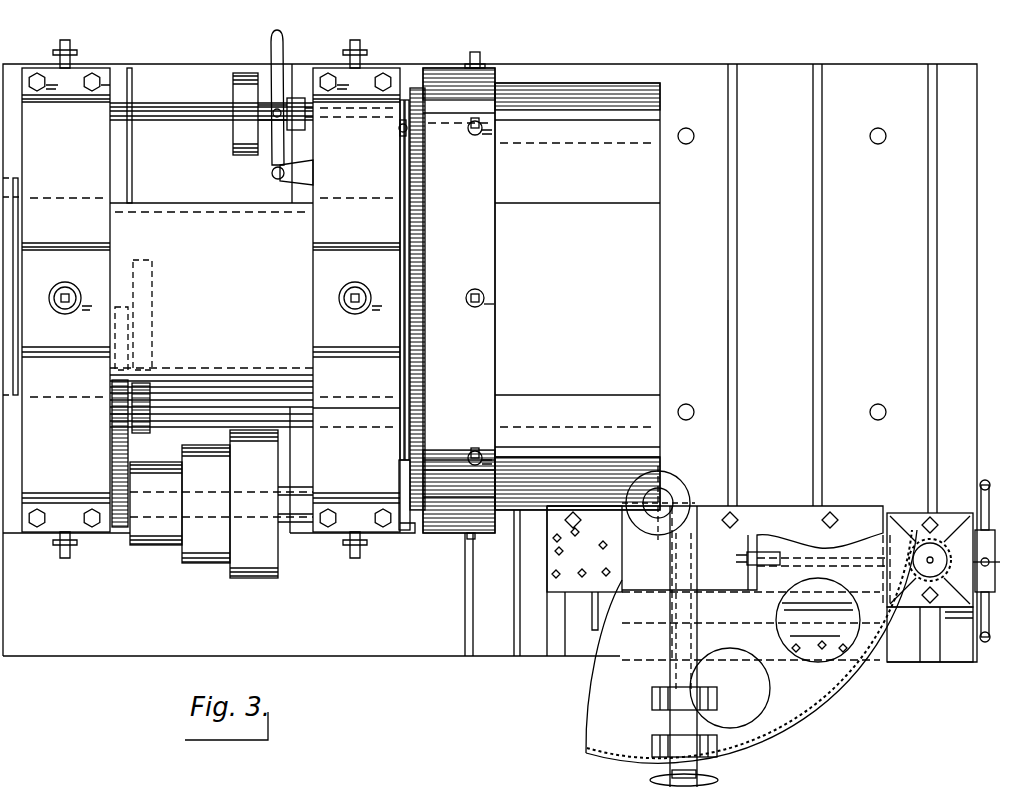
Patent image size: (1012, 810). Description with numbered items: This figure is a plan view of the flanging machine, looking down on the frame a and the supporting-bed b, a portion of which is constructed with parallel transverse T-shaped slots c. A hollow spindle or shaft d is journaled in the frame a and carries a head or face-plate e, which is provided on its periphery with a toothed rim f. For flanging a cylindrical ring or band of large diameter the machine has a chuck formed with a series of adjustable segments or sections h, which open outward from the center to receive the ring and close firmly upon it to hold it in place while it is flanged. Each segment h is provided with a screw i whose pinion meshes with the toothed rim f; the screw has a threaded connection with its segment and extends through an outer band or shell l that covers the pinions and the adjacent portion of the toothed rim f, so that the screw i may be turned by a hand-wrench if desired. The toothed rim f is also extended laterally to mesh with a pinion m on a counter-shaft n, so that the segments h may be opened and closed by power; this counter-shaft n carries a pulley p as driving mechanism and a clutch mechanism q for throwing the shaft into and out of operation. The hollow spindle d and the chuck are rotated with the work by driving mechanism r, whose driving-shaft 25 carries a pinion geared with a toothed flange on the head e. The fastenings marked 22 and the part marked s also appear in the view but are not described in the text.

The bolt 22 is at (370, 283).
The driving-shaft 25 is at (200, 462).
The frame a is at (209, 300).
The supporting-bed b is at (490, 363).
The T-shaped slots c is at (733, 357).
The hollow spindle or shaft d is at (211, 219).
The head or face-plate e is at (400, 380).
The toothed rim f is at (424, 386).
The adjustable segments or sections h is at (557, 462).
The screw i is at (466, 540).
The outer band or shell l is at (459, 300).
The pinion m is at (400, 130).
The counter-shaft n is at (175, 103).
The pulley p is at (233, 84).
The clutch mechanism q is at (272, 58).
The driving mechanism r is at (156, 494).
The segment plate s is at (773, 626).